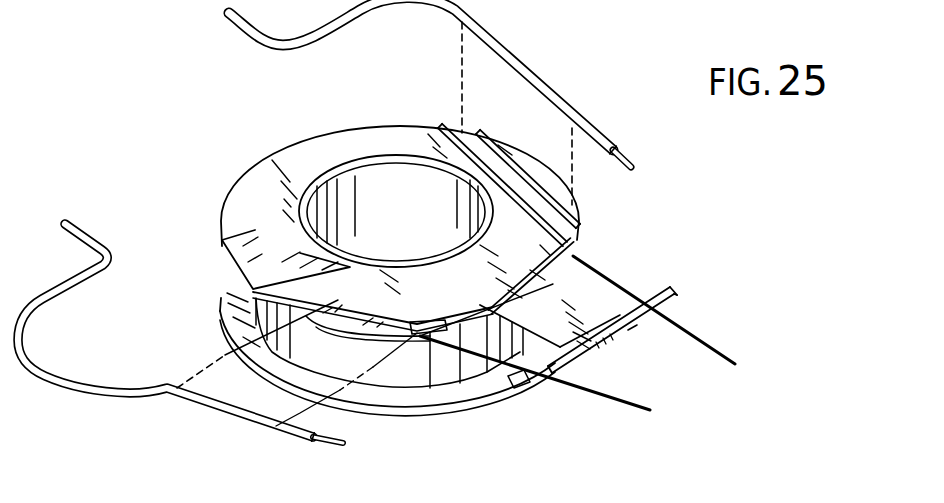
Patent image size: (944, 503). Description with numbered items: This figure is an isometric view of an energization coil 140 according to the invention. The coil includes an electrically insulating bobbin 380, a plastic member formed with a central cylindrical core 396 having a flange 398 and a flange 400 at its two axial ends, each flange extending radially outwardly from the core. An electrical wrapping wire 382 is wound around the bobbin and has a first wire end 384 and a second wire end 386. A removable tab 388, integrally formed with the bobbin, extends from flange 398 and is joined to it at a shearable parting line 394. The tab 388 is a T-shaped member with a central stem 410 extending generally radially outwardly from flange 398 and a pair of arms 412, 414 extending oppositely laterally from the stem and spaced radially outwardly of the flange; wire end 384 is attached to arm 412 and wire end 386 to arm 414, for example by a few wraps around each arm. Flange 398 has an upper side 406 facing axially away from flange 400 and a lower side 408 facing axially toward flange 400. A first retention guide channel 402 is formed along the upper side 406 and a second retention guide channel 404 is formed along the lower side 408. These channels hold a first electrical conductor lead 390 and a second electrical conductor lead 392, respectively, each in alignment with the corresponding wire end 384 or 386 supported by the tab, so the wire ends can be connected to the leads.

The energization coil 140 is at (195, 202).
The bobbin 380 is at (247, 176).
The electrical wrapping wire 382 is at (222, 292).
The first wire end 384 is at (622, 291).
The second wire end 386 is at (590, 393).
The removable tab 388 is at (590, 358).
The first electrical conductor lead 390 is at (625, 158).
The second electrical conductor lead 392 is at (340, 448).
The shearable parting line 394 is at (492, 292).
The central cylindrical core 396 is at (368, 181).
The flange 398 is at (418, 137).
The flange 400 is at (230, 317).
The first retention guide channel 402 is at (562, 208).
The second retention guide channel 404 is at (423, 333).
The upper side 406 is at (522, 160).
The lower side 408 is at (233, 241).
The central stem 410 is at (563, 305).
The arm 412 is at (672, 292).
The arm 414 is at (522, 388).